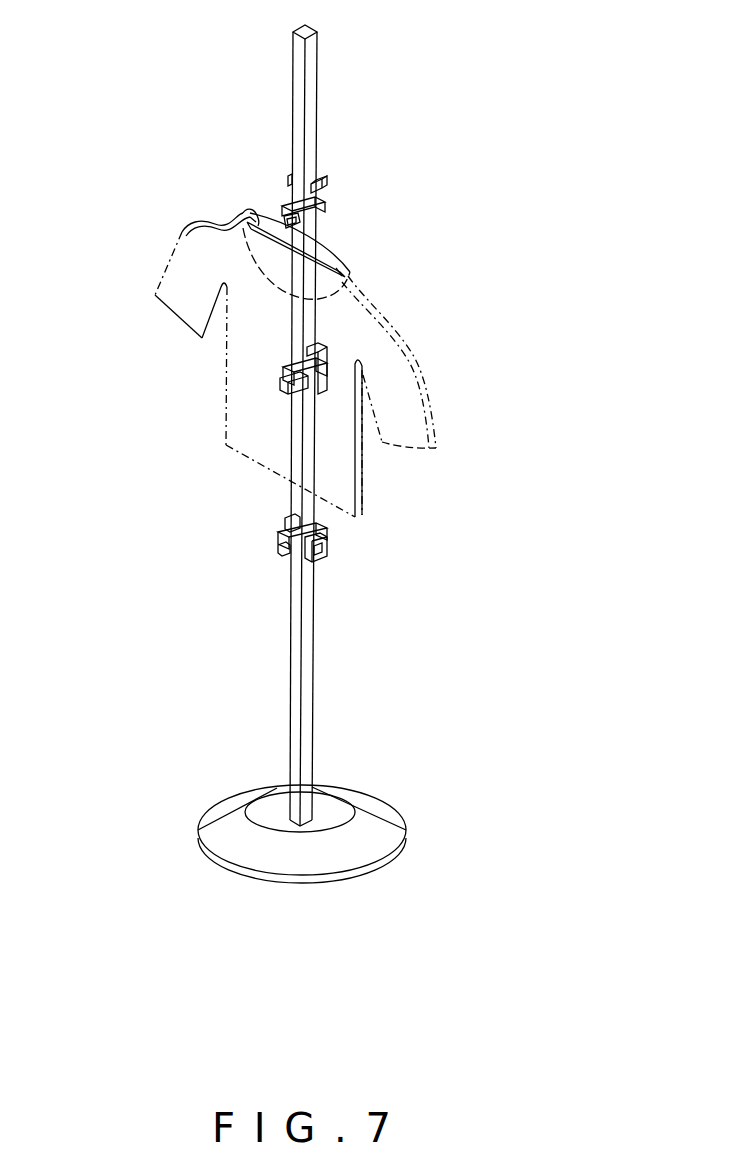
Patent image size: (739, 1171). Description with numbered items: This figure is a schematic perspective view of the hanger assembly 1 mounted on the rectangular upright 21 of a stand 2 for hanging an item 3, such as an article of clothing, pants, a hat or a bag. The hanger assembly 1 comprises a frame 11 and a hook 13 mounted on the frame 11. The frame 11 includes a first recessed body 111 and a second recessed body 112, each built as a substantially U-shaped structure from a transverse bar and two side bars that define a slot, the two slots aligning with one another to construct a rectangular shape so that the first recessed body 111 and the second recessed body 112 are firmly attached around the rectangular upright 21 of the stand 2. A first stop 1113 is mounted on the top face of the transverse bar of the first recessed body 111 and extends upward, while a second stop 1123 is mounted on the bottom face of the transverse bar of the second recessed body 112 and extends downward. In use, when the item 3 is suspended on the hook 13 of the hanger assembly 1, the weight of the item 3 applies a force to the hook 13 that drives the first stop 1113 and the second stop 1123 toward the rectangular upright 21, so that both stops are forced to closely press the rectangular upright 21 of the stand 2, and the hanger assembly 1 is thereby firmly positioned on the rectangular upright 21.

The hanger assembly 1 is at (274, 199).
The frame 11 is at (283, 189).
The first recessed body 111 is at (325, 192).
The first stop 1113 is at (318, 174).
The second recessed body 112 is at (283, 204).
The second stop 1123 is at (293, 226).
The hook 13 is at (270, 219).
The stand 2 is at (282, 53).
The rectangular upright 21 is at (300, 72).
The item 3 is at (407, 319).